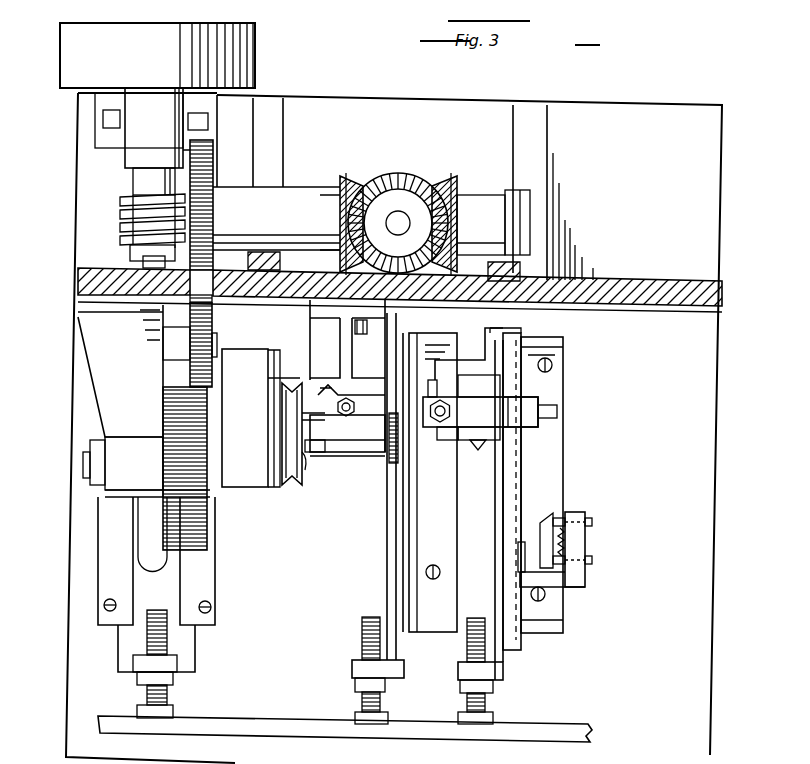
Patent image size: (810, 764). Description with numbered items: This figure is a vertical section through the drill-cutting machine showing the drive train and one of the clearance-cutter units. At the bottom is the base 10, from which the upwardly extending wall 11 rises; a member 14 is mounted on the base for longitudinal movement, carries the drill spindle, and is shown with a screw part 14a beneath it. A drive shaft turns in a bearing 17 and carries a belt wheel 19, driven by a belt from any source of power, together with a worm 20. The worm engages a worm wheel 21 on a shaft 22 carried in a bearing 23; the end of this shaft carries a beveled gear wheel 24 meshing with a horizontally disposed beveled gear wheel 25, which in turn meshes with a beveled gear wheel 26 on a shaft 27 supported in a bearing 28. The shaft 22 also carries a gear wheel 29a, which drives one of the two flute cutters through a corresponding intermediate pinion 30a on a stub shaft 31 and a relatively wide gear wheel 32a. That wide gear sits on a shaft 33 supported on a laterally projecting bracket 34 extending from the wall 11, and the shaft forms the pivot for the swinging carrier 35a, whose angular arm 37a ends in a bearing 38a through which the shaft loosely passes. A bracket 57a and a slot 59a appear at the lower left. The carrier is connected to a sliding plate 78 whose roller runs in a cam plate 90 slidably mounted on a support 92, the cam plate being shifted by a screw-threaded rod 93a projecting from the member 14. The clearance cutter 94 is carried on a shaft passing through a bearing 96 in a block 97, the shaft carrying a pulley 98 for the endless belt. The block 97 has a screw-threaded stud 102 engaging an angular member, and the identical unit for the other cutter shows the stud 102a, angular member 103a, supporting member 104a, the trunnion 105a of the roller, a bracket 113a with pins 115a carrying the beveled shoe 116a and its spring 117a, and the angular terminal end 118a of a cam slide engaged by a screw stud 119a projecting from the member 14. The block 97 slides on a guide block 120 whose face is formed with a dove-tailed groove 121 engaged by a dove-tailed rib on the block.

The base 10 is at (706, 470).
The upwardly extending wall 11 is at (655, 292).
The member 14 is at (300, 706).
The adjusting screw 14a is at (168, 700).
The bearing 17 is at (148, 125).
The belt wheel 19 is at (68, 60).
The worm 20 is at (130, 207).
The worm wheel 21 is at (135, 265).
The shaft 22 is at (323, 200).
The bearing 23 is at (291, 212).
The beveled gear wheel 24 is at (355, 186).
The beveled gear wheel 25 is at (410, 190).
The beveled gear wheel 26 is at (452, 192).
The shaft 27 is at (470, 203).
The bearing 28 is at (492, 206).
The gear wheel 29a is at (200, 170).
The intermediate pinion 30a is at (214, 322).
The stub shaft 31 is at (162, 350).
The gear wheel 32a is at (208, 540).
The shaft 33 is at (88, 468).
The bracket 34 is at (105, 402).
The carrier 35a is at (284, 360).
The arm 37a is at (270, 410).
The bearing 38a is at (282, 490).
The bracket 57a is at (120, 643).
The slot 59a is at (150, 532).
The sliding plate 78 is at (392, 368).
The cam plate 90 is at (400, 578).
The support 92 is at (410, 548).
The screw-threaded rod 93a is at (362, 640).
The clearance cutter 94 is at (400, 455).
The bearing 96 is at (310, 455).
The block 97 is at (318, 413).
The pulley 98 is at (305, 488).
The screw-threaded stud 102 is at (346, 415).
The screw-threaded stud 102a is at (500, 330).
The angular member 103a is at (480, 418).
The supporting member 104a is at (522, 408).
The trunnion 105a is at (560, 412).
The bracket 113a is at (577, 588).
The pins 115a is at (433, 378).
The shoe 116a is at (478, 470).
The spring 117a is at (563, 542).
The angular terminal end 118a is at (493, 670).
The screw stud 119a is at (468, 652).
The guide block 120 is at (392, 318).
The dove-tailed groove 121 is at (335, 392).